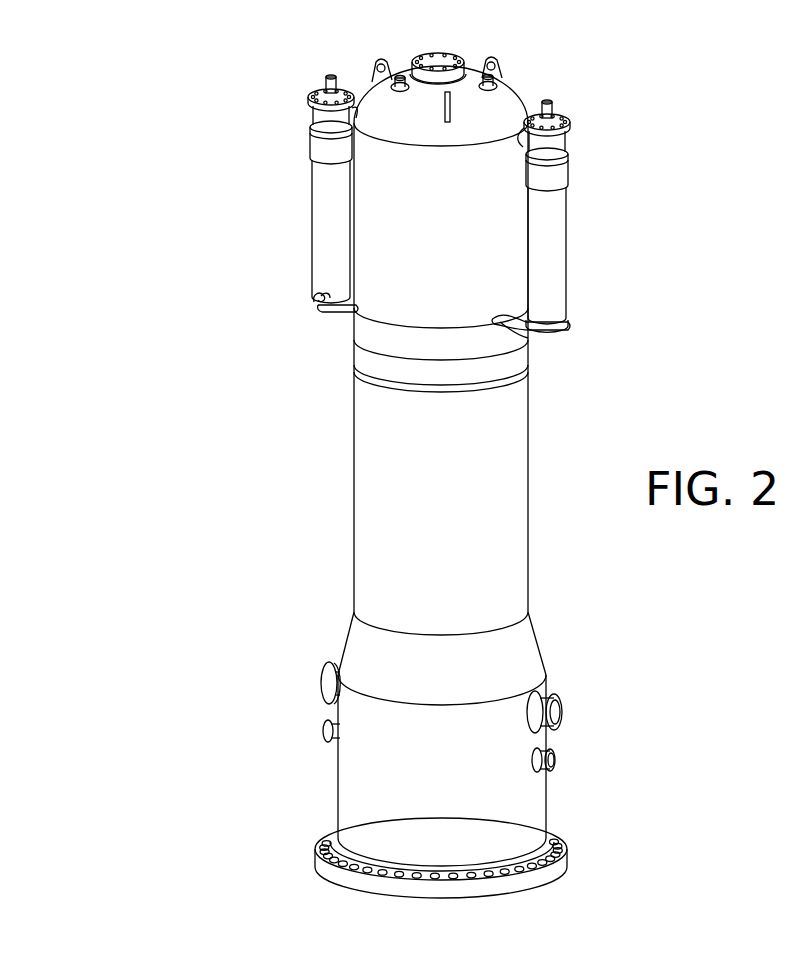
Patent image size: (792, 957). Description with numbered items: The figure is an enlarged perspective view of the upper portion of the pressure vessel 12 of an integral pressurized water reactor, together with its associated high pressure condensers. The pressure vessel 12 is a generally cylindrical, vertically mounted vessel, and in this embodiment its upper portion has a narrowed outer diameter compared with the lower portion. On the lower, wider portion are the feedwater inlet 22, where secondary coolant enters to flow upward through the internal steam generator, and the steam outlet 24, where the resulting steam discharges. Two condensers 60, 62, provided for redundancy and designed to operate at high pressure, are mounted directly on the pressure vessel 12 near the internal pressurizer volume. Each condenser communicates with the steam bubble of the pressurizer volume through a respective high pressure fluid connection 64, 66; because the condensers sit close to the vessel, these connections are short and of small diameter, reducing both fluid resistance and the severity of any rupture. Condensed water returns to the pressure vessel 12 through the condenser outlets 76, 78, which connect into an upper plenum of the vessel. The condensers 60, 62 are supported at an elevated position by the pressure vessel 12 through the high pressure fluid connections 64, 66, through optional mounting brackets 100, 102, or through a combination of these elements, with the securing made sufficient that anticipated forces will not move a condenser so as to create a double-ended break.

The pressure vessel 12 is at (373, 513).
The feedwater inlet 22 is at (557, 757).
The steam outlet 24 is at (563, 710).
The condenser 60 is at (550, 257).
The condenser 62 is at (313, 247).
The high pressure fluid connection 64 is at (502, 140).
The high pressure fluid connection 66 is at (313, 110).
The condenser outlet 76 is at (510, 337).
The condenser outlet 78 is at (327, 311).
The mounting bracket 100 is at (560, 172).
The mounting bracket 102 is at (317, 145).